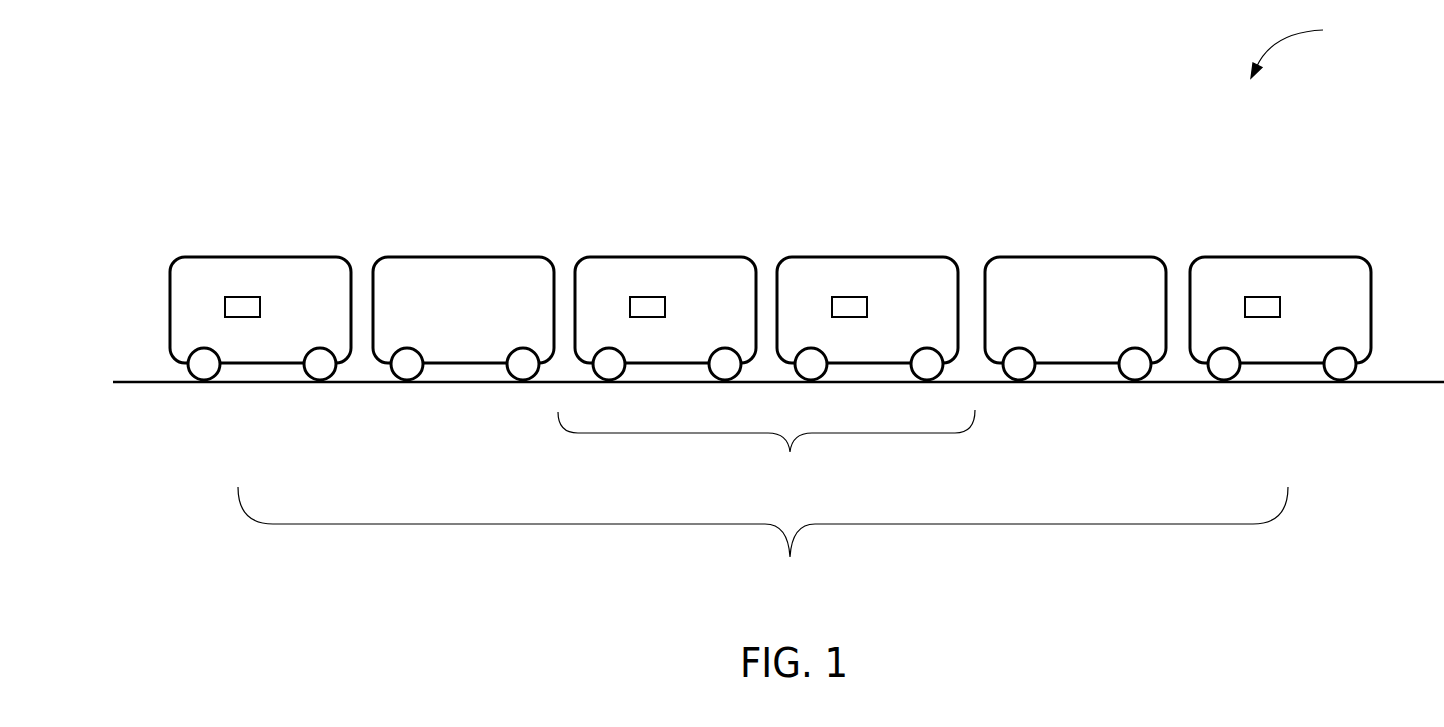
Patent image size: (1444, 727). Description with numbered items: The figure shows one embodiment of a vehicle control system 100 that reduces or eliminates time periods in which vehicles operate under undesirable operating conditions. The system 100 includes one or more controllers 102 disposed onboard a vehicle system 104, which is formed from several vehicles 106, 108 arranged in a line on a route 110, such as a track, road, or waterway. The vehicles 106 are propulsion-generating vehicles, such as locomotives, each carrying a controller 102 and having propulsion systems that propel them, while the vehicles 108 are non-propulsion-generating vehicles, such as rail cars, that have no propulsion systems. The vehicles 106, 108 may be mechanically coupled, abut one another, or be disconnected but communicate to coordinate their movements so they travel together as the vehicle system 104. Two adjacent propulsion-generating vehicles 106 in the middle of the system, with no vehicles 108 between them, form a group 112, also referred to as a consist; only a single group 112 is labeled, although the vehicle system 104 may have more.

The vehicle control system 100 is at (763, 543).
The controller 102 is at (227, 297).
The vehicle system 104 is at (1314, 45).
The propulsion-generating vehicle 106 is at (281, 257).
The non-propulsion-generating vehicle 108 is at (458, 257).
The route 110 is at (1410, 380).
The group of vehicles 112 is at (766, 451).